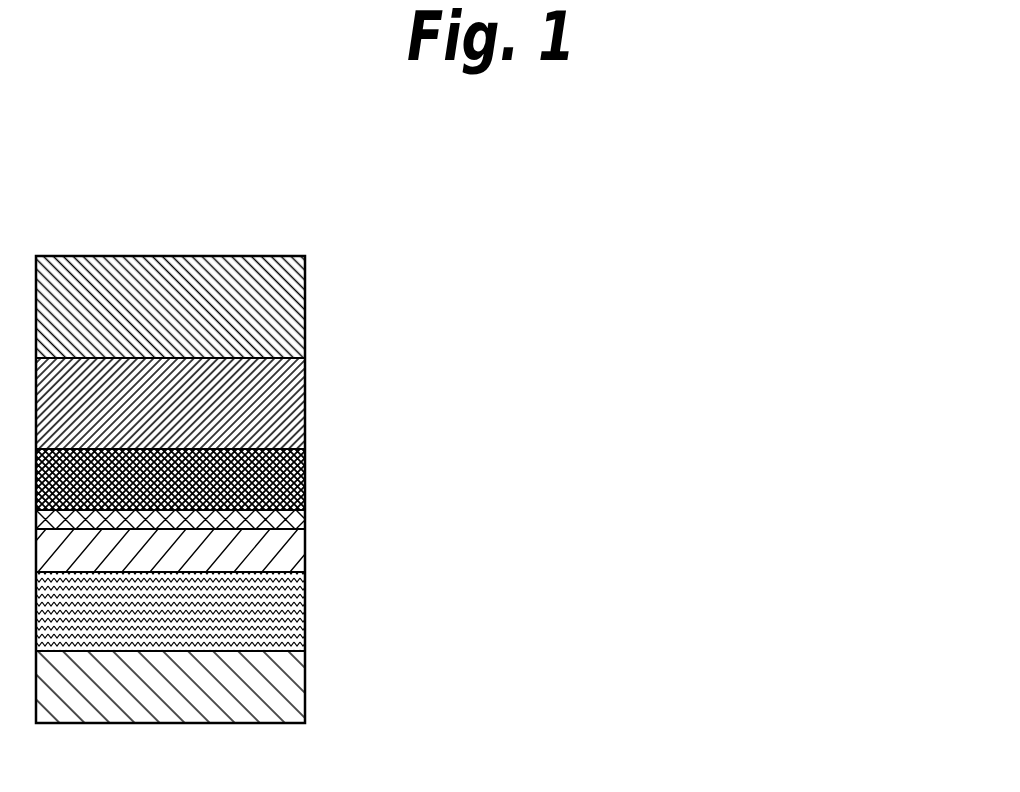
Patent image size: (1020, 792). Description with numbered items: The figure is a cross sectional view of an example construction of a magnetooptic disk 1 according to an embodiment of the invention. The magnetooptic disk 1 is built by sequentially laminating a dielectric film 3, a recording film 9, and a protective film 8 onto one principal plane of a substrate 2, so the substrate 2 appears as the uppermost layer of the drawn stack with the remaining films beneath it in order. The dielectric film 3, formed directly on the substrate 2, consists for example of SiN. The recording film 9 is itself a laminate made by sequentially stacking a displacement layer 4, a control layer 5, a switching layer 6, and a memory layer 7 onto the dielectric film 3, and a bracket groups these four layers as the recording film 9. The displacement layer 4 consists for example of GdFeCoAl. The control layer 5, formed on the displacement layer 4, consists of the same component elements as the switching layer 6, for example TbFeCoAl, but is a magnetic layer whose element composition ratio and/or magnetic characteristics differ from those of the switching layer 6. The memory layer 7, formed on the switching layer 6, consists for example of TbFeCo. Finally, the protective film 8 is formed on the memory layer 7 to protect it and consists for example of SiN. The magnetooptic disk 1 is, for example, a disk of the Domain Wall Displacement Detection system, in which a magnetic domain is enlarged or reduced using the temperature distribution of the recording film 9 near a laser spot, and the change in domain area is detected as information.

The magnetooptic disk 1 is at (136, 243).
The substrate 2 is at (305, 303).
The dielectric film 3 is at (305, 395).
The displacement layer 4 is at (305, 476).
The control layer 5 is at (305, 516).
The switching layer 6 is at (305, 546).
The memory layer 7 is at (305, 608).
The protective film 8 is at (305, 678).
The recording film 9 is at (693, 452).